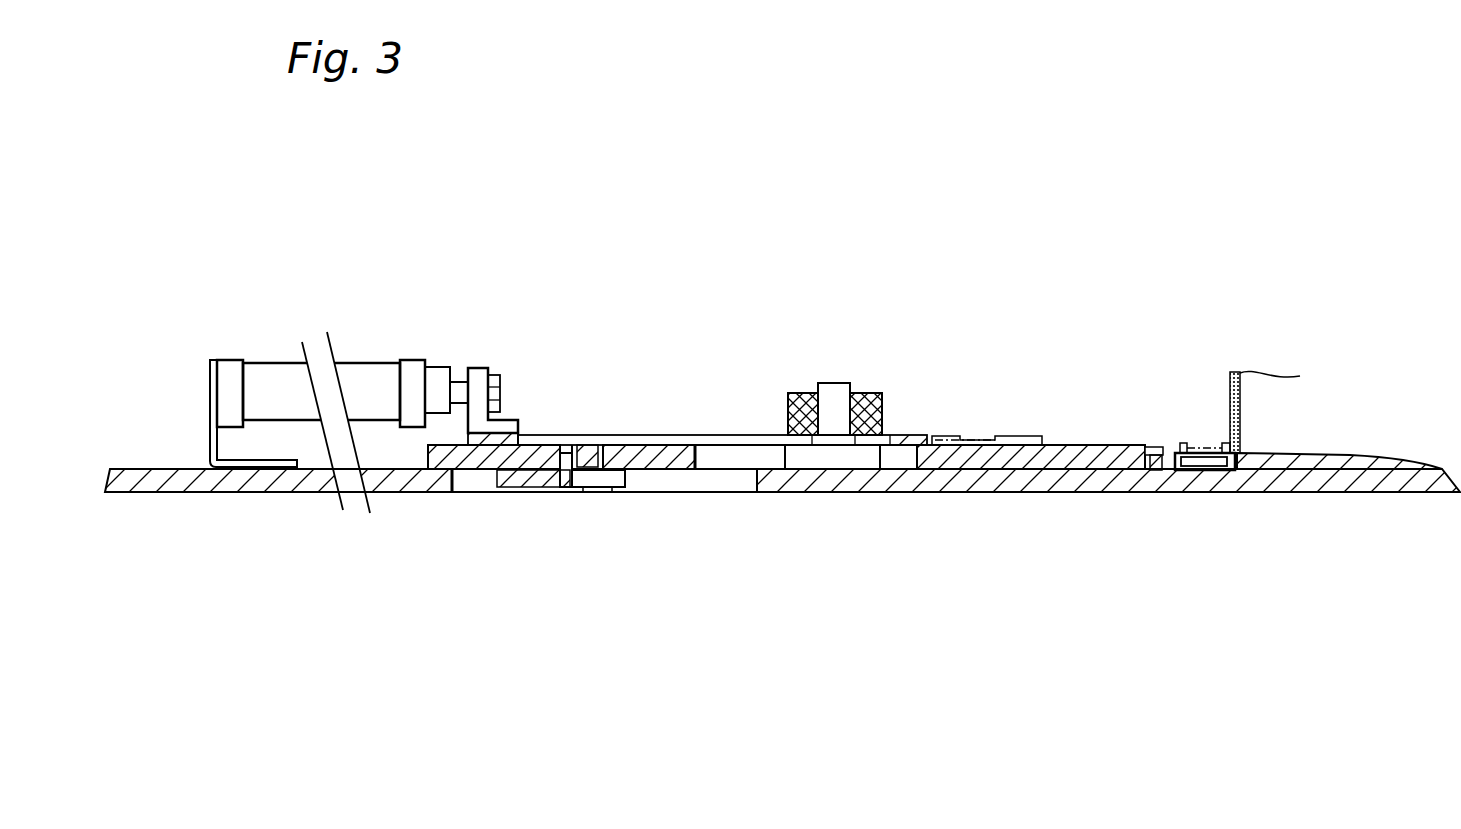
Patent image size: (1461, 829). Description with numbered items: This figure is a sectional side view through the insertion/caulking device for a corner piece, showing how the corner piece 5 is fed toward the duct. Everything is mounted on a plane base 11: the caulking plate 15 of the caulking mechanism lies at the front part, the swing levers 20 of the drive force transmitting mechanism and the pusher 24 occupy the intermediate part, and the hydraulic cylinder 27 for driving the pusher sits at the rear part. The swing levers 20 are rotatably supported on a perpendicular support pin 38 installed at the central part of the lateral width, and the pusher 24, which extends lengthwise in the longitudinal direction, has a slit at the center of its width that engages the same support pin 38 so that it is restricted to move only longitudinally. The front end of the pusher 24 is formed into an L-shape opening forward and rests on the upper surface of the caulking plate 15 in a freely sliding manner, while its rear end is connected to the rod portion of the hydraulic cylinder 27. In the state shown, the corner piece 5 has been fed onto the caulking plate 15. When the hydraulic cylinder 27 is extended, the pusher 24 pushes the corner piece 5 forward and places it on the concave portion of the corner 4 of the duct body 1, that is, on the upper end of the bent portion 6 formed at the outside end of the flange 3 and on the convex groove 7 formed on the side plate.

The duct body 1 is at (1260, 412).
The flange 3 is at (1203, 472).
The corner 4 is at (1236, 480).
The corner piece 5 is at (967, 437).
The bent portion 6 is at (1170, 462).
The convex groove 7 is at (1235, 457).
The base 11 is at (695, 485).
The caulking plate 15 is at (1050, 462).
The swing levers 20 is at (788, 425).
The pusher 24 is at (620, 436).
The hydraulic cylinder 27 is at (357, 368).
The support pin 38 is at (832, 392).